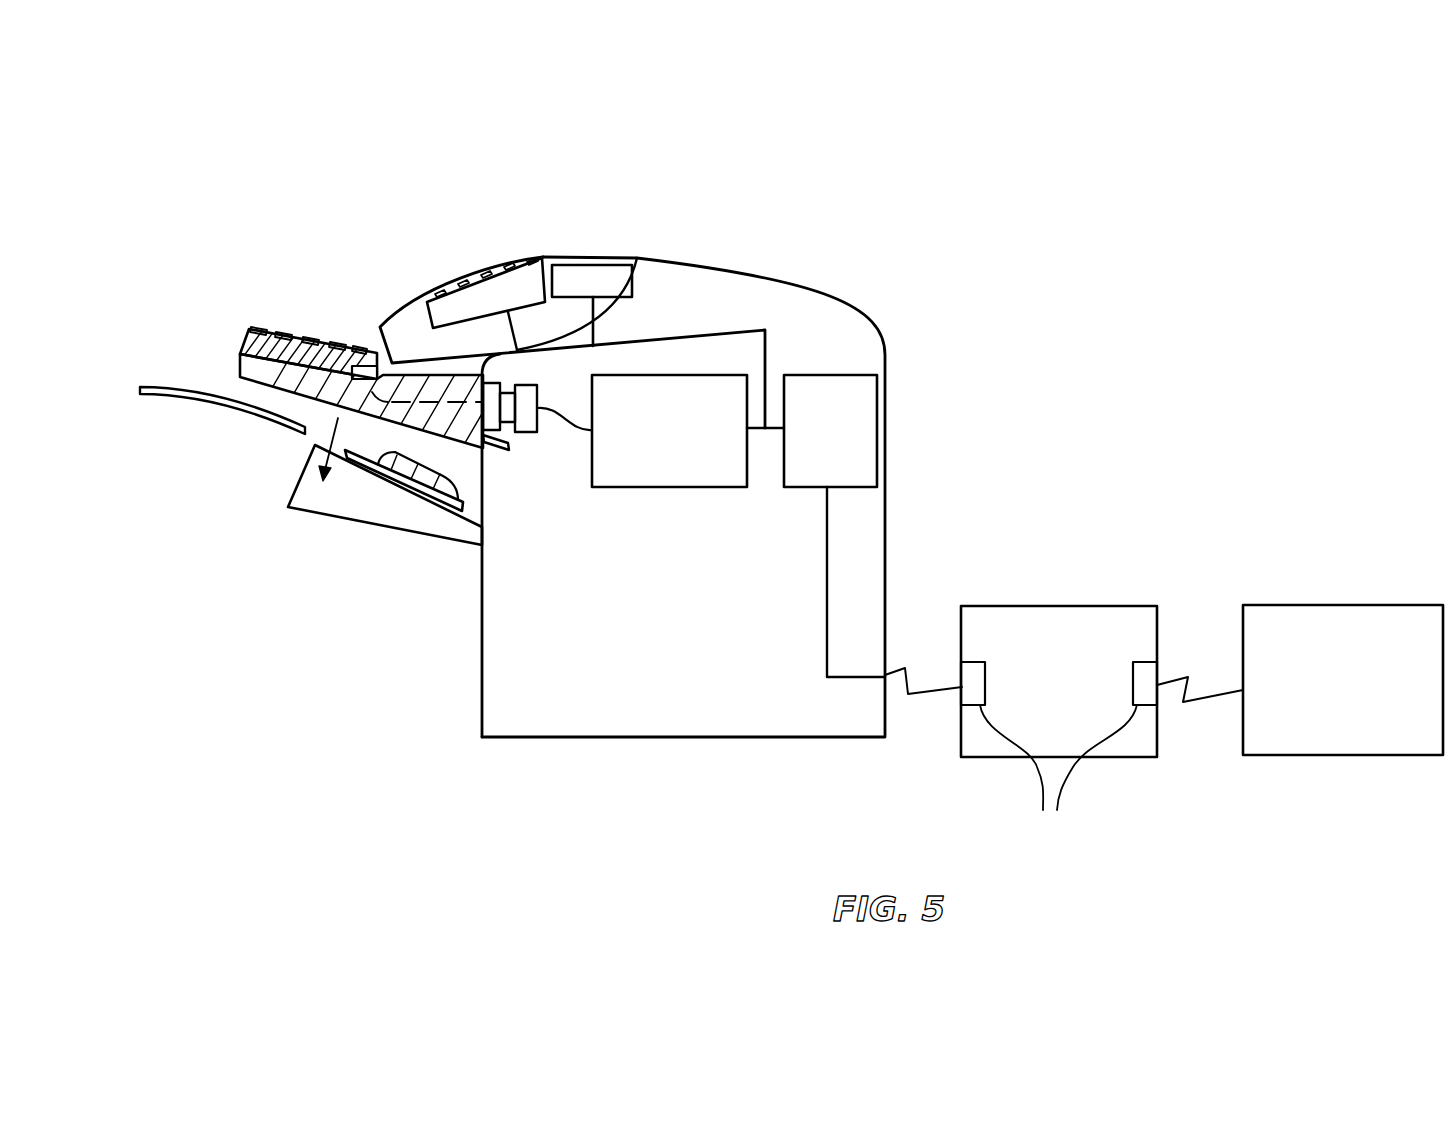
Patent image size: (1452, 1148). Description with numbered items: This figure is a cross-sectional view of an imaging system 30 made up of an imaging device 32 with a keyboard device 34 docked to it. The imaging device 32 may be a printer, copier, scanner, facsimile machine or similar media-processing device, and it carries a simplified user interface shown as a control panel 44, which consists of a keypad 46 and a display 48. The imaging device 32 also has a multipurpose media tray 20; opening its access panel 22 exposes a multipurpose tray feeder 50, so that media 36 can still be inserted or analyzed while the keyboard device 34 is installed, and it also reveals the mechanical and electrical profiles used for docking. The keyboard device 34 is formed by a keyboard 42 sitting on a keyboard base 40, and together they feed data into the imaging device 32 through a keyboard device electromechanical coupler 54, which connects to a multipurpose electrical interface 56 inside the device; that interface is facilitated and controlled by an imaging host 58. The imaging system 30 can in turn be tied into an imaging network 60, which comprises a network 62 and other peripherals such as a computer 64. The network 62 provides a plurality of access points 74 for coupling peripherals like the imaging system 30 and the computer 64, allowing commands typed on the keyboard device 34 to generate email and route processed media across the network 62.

The multipurpose media tray 20 is at (238, 467).
The access panel 22 is at (320, 513).
The imaging system 30 is at (700, 215).
The imaging device 32 is at (817, 312).
The keyboard device 34 is at (276, 301).
The media 36 is at (162, 386).
The keyboard base 40 is at (297, 382).
The keyboard 42 is at (302, 338).
The control panel 44 is at (485, 252).
The keypad 46 is at (499, 226).
The display 48 is at (612, 268).
The multipurpose tray feeder 50 is at (358, 462).
The keyboard device electromechanical coupler 54 is at (503, 462).
The multipurpose electrical interface 56 is at (660, 487).
The imaging host 58 is at (807, 487).
The imaging network 60 is at (1115, 308).
The network 62 is at (1058, 606).
The computer 64 is at (1353, 605).
The access points 74 is at (1058, 776).